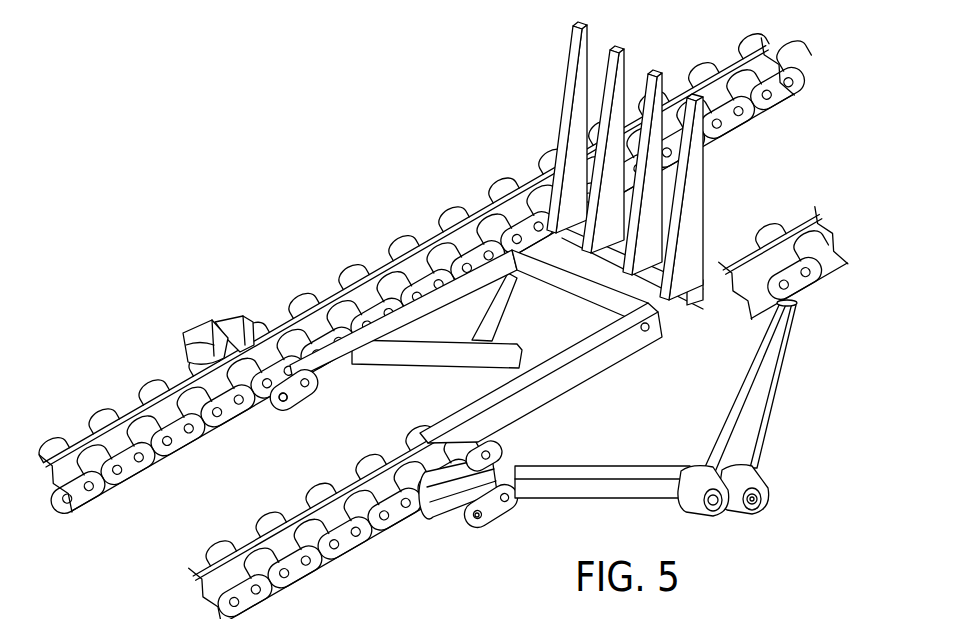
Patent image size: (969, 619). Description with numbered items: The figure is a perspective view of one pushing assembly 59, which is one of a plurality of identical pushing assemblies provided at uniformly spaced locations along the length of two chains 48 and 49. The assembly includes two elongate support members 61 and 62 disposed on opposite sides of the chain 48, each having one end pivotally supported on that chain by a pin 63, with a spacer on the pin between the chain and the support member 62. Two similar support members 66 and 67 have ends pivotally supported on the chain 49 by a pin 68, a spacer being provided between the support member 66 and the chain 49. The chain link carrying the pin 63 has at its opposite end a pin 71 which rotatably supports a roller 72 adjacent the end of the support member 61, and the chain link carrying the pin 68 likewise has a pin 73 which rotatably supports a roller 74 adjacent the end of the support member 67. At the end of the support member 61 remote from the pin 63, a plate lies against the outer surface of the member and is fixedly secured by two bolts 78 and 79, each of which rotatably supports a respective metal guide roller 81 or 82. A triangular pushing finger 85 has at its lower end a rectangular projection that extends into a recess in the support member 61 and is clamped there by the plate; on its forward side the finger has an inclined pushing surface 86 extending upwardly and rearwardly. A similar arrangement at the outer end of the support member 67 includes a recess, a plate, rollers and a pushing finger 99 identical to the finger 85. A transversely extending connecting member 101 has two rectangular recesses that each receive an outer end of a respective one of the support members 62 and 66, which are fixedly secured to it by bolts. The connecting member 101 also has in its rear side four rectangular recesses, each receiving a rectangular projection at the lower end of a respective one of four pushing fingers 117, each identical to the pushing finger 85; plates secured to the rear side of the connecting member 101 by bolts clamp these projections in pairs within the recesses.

The chain 48 is at (260, 547).
The chain 49 is at (113, 440).
The pushing assembly 59 is at (428, 184).
The support member 61 is at (607, 485).
The support member 62 is at (568, 377).
The pin 63 is at (508, 505).
The support member 66 is at (376, 343).
The support member 67 is at (417, 366).
The pin 68 is at (308, 388).
The pin 71 is at (478, 522).
The roller 72 is at (440, 516).
The pin 73 is at (284, 403).
The roller 74 is at (190, 335).
The bolt 78 is at (646, 333).
The bolt 79 is at (755, 514).
The guide roller 81 is at (696, 508).
The guide roller 82 is at (771, 496).
The pushing finger 85 is at (758, 410).
The pushing surface 86 is at (743, 393).
The pushing finger 99 is at (497, 333).
The connecting member 101 is at (583, 282).
The pushing fingers 117 is at (567, 90).